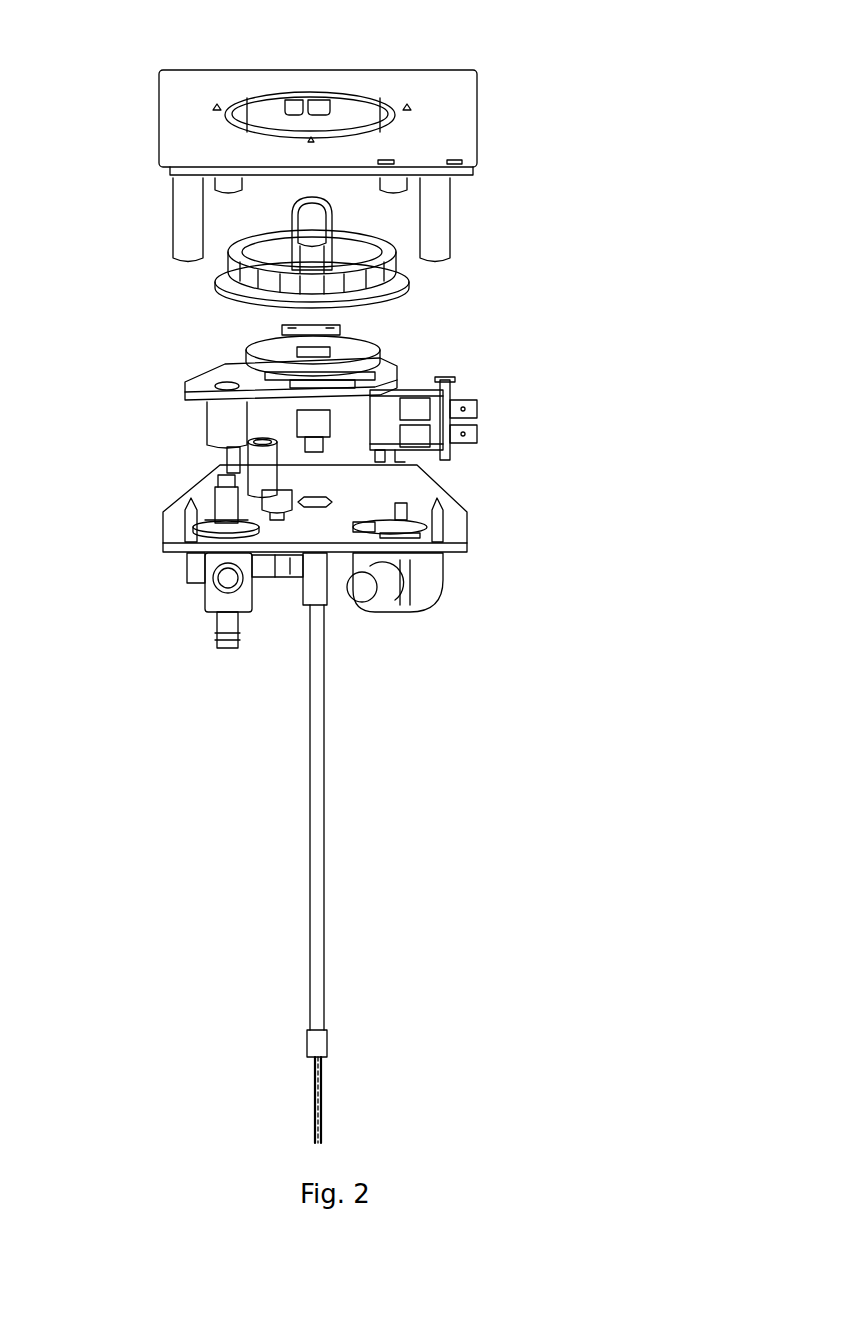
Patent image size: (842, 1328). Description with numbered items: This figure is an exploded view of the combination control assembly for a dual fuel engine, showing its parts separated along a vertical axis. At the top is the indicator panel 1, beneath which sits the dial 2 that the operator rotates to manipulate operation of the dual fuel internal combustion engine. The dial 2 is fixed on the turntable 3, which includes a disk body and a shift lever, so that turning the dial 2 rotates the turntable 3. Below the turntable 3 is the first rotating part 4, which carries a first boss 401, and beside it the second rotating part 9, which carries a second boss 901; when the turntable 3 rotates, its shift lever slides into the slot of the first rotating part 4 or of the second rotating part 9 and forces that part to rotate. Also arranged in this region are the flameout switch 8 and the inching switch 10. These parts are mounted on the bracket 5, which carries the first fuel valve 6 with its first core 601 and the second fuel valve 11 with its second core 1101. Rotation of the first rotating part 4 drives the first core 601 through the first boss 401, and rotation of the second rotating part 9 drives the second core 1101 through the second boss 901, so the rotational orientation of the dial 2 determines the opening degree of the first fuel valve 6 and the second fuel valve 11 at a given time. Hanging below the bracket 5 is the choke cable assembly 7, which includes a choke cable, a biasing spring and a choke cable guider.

The indicator panel 1 is at (168, 103).
The dial 2 is at (230, 250).
The turntable 3 is at (245, 353).
The first rotating part 4 is at (208, 383).
The first boss 401 is at (222, 430).
The bracket 5 is at (217, 480).
The first core 601 is at (225, 515).
The first fuel valve 6 is at (215, 605).
The choke cable assembly 7 is at (320, 720).
The flameout switch 8 is at (340, 325).
The second rotating part 9 is at (418, 370).
The inching switch 10 is at (458, 393).
The second boss 901 is at (475, 408).
The second fuel valve 11 is at (465, 535).
The second core 1101 is at (403, 512).